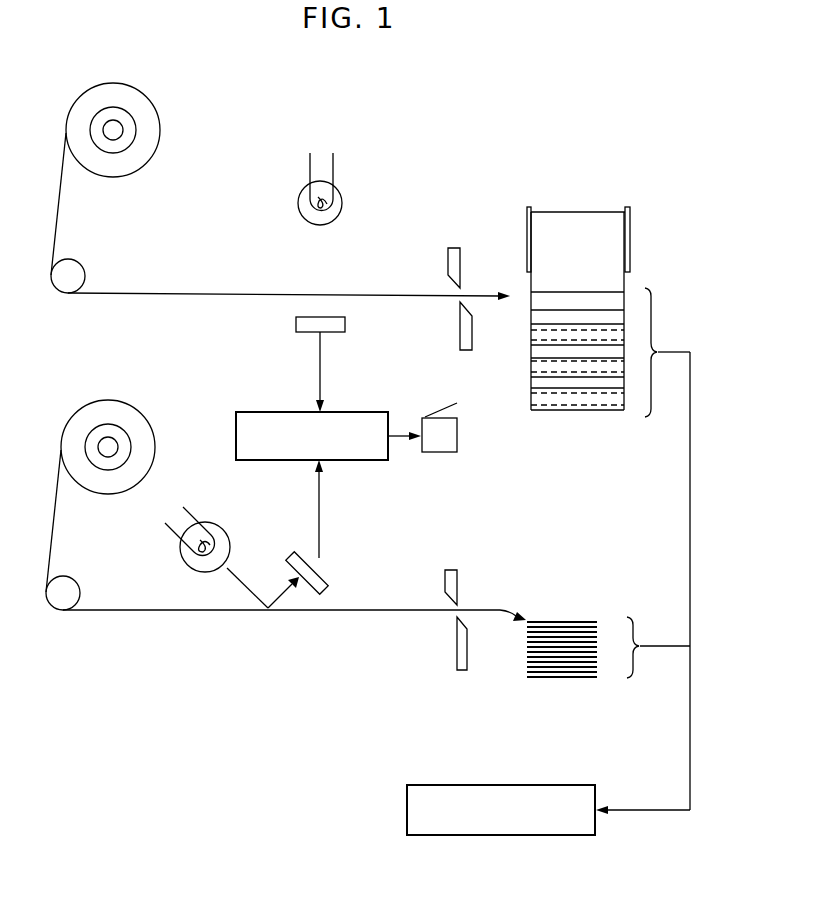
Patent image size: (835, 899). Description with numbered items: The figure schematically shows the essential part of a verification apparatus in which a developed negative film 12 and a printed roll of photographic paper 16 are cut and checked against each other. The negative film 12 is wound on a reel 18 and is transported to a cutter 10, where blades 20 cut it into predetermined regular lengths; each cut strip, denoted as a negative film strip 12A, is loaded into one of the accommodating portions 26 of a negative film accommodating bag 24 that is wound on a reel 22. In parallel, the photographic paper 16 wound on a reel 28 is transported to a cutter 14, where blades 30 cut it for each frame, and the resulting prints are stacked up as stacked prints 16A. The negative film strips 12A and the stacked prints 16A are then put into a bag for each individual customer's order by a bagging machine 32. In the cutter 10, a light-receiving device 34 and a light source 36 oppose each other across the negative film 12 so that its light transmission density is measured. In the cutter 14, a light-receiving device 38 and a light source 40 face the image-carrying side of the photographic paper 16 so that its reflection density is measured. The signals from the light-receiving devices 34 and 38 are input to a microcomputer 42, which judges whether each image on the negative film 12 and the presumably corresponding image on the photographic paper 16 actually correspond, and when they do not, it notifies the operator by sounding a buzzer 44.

The cutter 10 is at (420, 180).
The negative film 12 is at (213, 293).
The negative film strip 12A is at (540, 326).
The cutter 14 is at (206, 434).
The photographic paper 16 is at (413, 610).
The stacked prints 16A is at (563, 621).
The reel 18 is at (135, 120).
The blades 20 is at (458, 318).
The reel 22 is at (632, 222).
The negative film accommodating bag 24 is at (552, 420).
The accommodating portion 26 is at (622, 331).
The reel 28 is at (122, 428).
The blades 30 is at (455, 641).
The bagging machine 32 is at (508, 785).
The light-receiving device 34 is at (345, 326).
The light source 36 is at (343, 202).
The light-receiving device 38 is at (323, 579).
The light source 40 is at (227, 529).
The microcomputer 42 is at (380, 412).
The buzzer 44 is at (446, 453).